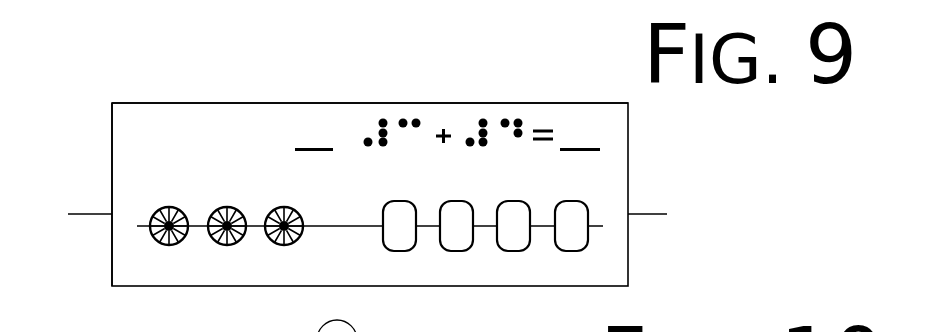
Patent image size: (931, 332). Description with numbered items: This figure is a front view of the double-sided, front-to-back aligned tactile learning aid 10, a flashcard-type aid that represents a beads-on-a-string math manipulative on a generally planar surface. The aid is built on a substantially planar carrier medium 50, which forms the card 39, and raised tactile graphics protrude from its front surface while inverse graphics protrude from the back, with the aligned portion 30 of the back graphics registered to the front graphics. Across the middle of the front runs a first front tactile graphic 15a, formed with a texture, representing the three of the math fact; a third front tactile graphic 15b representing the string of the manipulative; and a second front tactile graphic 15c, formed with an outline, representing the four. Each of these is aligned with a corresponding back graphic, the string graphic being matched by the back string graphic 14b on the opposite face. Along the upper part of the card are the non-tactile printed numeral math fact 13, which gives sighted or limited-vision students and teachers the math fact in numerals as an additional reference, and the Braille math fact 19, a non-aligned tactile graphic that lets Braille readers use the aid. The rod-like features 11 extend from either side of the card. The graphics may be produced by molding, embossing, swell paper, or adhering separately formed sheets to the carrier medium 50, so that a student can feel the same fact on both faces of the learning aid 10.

In FIG. 9, the tactile learning aid 10 is at (140, 63).
In FIG. 9, the carrier medium 50 is at (112, 128).
In FIG. 9, the card 39 is at (260, 103).
In FIG. 9, the numeral math fact 13 is at (165, 130).
In FIG. 9, the Braille math fact 19 is at (487, 118).
In FIG. 9, the rod ends 11 is at (94, 185).
In FIG. 9, the aligned portion 30 is at (533, 228).
In FIG. 9, the front tactile graphic 15a is at (272, 238).
In FIG. 9, the front tactile graphic 15b is at (342, 226).
In FIG. 9, the front tactile graphic 15c is at (520, 251).
In FIG. 10, the back tactile graphic 14b is at (234, 323).